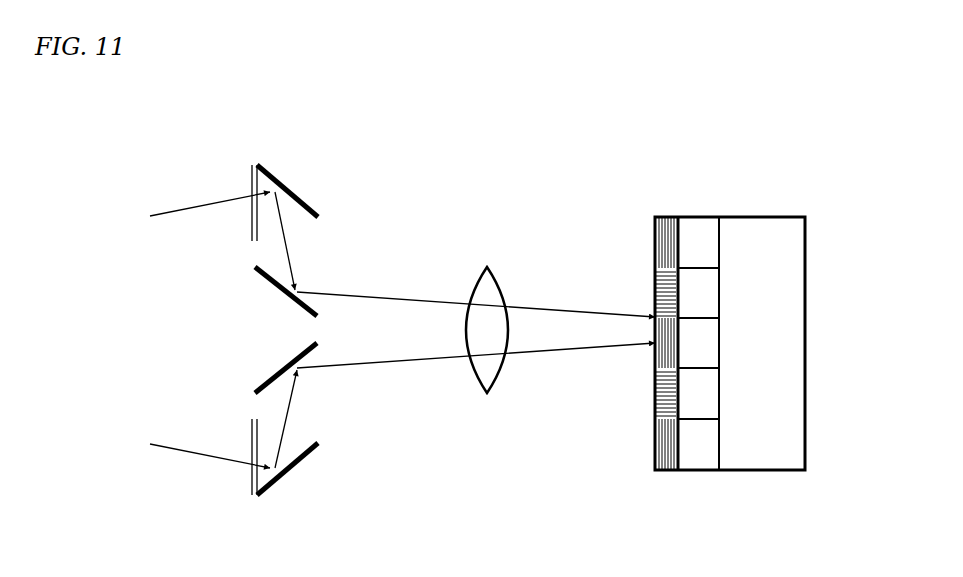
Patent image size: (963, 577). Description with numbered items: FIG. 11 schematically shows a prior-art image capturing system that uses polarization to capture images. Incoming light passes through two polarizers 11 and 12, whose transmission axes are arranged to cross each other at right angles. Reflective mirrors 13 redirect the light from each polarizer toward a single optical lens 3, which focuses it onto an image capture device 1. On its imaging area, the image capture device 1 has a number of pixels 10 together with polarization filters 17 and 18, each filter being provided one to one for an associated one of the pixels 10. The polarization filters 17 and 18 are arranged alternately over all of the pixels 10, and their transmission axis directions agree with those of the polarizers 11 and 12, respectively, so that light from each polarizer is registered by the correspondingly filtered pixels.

The image capture device 1 is at (762, 242).
The optical lens 3 is at (487, 292).
The pixels 10 is at (698, 242).
The polarizer 11 is at (253, 190).
The polarizer 12 is at (253, 468).
The reflective mirrors 13 is at (297, 190).
The polarization filter 17 is at (657, 240).
The polarization filter 18 is at (657, 290).